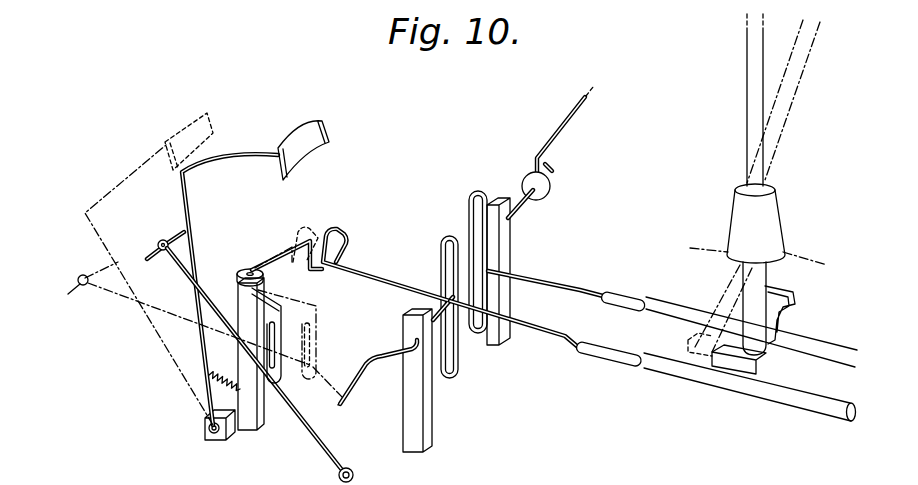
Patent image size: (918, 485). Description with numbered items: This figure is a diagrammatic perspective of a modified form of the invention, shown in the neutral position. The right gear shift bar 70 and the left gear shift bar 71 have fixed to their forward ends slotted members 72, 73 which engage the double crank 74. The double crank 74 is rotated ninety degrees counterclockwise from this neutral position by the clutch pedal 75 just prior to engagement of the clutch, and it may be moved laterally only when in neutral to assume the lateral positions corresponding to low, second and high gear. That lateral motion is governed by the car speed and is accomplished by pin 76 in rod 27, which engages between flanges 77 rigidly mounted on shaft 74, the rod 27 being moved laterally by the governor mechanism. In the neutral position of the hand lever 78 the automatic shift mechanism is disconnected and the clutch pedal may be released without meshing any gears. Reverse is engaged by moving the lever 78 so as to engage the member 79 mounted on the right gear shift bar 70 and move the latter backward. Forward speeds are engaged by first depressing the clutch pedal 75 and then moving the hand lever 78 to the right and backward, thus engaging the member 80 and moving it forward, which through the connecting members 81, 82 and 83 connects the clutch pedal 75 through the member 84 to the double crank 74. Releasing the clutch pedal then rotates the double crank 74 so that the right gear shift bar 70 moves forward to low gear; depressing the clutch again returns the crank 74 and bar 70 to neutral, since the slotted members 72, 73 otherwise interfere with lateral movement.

The rod 27 is at (571, 109).
The right gear shift bar 70 is at (637, 298).
The left gear shift bar 71 is at (647, 367).
The slotted member 72 is at (543, 280).
The slotted member 73 is at (530, 332).
The double crank 74 is at (528, 197).
The clutch pedal 75 is at (180, 193).
The pin 76 is at (531, 168).
The flanges 77 is at (552, 180).
The hand lever 78 is at (750, 277).
The reverse engaging member 79 is at (795, 308).
The forward engaging member 80 is at (732, 363).
The connecting member 81 is at (382, 272).
The connecting member 82 is at (292, 244).
The connecting member 83 is at (283, 349).
The connecting member 84 is at (300, 422).